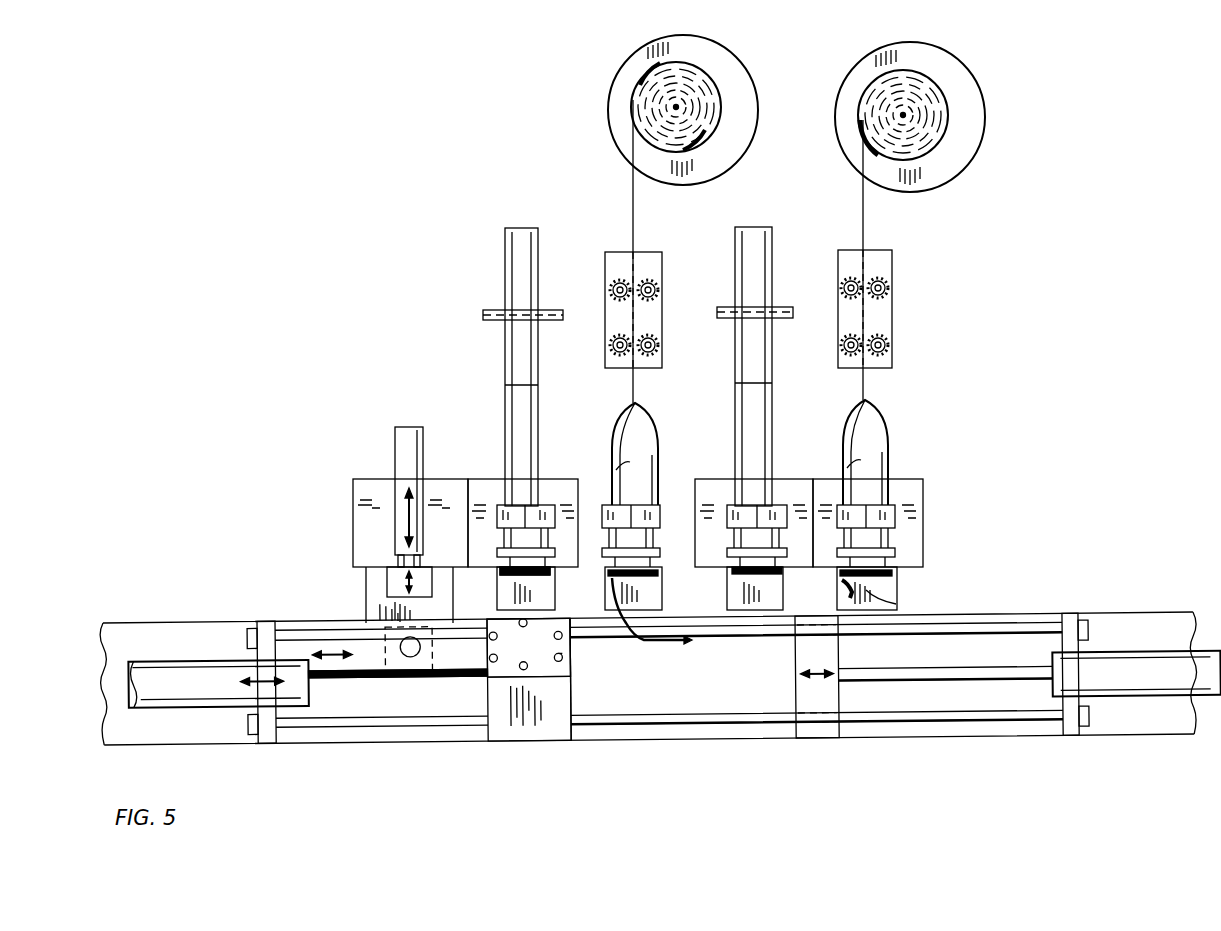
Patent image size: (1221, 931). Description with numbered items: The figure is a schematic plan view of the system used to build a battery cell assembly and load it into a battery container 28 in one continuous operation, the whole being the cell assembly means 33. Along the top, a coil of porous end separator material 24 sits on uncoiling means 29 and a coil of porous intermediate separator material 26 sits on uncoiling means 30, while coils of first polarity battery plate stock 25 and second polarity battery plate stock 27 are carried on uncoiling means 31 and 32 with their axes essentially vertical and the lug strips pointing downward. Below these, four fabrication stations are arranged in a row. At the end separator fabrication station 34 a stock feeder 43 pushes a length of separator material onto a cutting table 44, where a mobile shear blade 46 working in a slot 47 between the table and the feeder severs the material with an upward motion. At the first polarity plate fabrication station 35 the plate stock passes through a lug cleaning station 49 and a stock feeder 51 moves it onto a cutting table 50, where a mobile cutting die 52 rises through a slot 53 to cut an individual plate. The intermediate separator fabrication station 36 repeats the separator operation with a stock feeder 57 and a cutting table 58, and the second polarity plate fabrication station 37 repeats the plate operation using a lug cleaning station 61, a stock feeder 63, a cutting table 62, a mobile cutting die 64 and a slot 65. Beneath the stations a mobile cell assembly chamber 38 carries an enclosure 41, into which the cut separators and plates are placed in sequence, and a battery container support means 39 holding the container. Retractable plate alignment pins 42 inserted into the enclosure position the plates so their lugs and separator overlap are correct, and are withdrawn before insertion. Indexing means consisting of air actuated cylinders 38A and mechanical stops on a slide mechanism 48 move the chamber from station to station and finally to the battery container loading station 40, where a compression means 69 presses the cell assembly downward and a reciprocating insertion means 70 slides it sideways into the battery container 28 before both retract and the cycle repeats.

The porous end separator material 24 is at (504, 279).
The battery plate stock of a first polarity 25 is at (716, 72).
The porous intermediate separator material 26 is at (741, 228).
The battery plate stock of a second polarity 27 is at (944, 72).
The battery container 28 is at (520, 743).
The uncoiling means 29 is at (484, 310).
The uncoiling means 30 is at (722, 309).
The uncoiling means 31 is at (756, 88).
The uncoiling means 32 is at (935, 117).
The cell assembly means 33 is at (880, 464).
The end separator fabrication station 34 is at (487, 495).
The first polarity plate fabrication station 35 is at (656, 478).
The intermediate separator fabrication station 36 is at (788, 485).
The second polarity plate fabrication station 37 is at (911, 482).
The mobile cell assembly chamber 38 is at (563, 664).
The air actuated cylinders 38A is at (187, 673).
The battery container support means 39 is at (572, 744).
The battery container loading station 40 is at (371, 492).
The enclosure 41 is at (544, 620).
The retractable plate alignment pins 42 is at (519, 625).
The stock feeder 43 is at (547, 506).
The cutting table 44 is at (502, 598).
The mobile shear blade 46 is at (510, 570).
The slot 47 is at (547, 570).
The slide mechanism 48 is at (934, 727).
The lug cleaning station 49 is at (656, 262).
The cutting table 50 is at (663, 606).
The stock feeder 51 is at (658, 512).
The mobile cutting die 52 is at (661, 577).
The slot 53 is at (617, 592).
The stock feeder 57 is at (780, 470).
The cutting table 58 is at (782, 606).
The lug cleaning station 61 is at (882, 267).
The cutting table 62 is at (895, 588).
The stock feeder 63 is at (900, 512).
The mobile cutting die 64 is at (895, 576).
The slot 65 is at (895, 604).
The compression means 69 is at (405, 660).
The reciprocating insertion means 70 is at (386, 588).